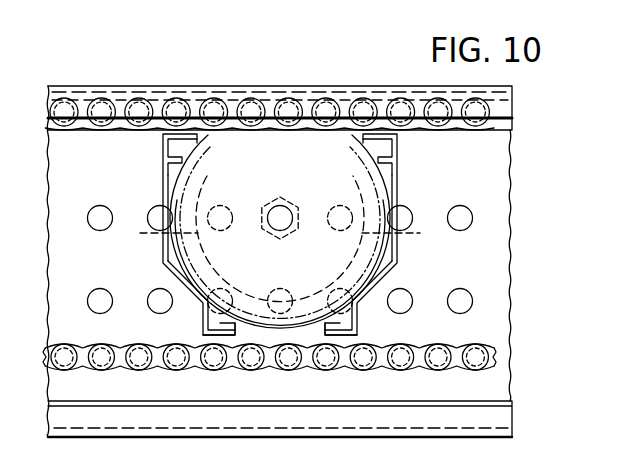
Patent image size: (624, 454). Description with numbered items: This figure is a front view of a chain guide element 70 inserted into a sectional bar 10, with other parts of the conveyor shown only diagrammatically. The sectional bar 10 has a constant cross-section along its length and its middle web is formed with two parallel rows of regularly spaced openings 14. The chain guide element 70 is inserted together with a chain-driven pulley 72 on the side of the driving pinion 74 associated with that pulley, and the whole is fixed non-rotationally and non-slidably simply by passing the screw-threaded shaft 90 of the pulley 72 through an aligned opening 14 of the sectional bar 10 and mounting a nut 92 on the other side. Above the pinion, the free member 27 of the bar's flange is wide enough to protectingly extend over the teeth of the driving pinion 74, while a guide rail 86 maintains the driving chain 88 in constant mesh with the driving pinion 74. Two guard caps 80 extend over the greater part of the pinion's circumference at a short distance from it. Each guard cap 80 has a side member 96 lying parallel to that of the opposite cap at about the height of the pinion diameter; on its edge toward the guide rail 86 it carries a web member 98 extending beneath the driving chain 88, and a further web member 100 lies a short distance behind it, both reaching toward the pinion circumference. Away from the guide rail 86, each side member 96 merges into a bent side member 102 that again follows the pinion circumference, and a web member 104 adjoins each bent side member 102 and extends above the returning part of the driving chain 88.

The sectional bar 10 is at (547, 268).
The openings 14 is at (470, 223).
The free member of the U-section flange 27 is at (513, 110).
The chain guide element 70 is at (161, 188).
The chain-driven pulley 72 is at (388, 188).
The driving pinion 74 is at (347, 132).
The guard caps 80 is at (152, 232).
The guide rail 86 is at (200, 90).
The driving chain 88 is at (125, 125).
The screw-threaded shaft 90 is at (278, 229).
The nut 92 is at (293, 232).
The side member 96 is at (162, 256).
The web member 98 is at (164, 139).
The further web member 100 is at (183, 163).
The bent side member 102 is at (187, 300).
The web member 104 is at (231, 340).